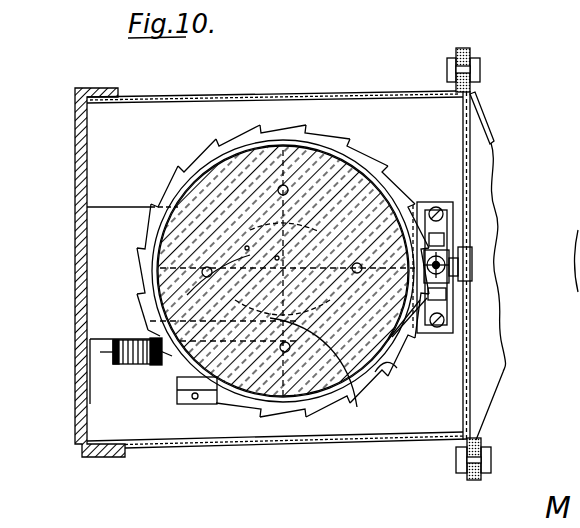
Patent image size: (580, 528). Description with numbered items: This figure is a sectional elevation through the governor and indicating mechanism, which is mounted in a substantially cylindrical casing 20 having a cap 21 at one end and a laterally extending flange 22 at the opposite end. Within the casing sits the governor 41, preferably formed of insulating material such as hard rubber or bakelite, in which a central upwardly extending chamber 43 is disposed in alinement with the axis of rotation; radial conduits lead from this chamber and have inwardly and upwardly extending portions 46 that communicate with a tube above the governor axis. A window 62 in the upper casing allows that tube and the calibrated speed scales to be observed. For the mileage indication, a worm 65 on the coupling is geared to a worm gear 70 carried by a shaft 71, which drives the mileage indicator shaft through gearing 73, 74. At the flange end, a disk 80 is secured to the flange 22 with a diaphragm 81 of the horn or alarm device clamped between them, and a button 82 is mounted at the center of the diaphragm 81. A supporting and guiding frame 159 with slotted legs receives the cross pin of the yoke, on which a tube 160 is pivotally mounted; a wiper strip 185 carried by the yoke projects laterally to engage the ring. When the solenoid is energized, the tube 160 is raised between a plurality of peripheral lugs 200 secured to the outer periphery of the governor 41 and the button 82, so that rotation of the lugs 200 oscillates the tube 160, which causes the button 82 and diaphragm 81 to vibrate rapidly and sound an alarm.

The casing 20 is at (205, 446).
The cap 21 is at (76, 142).
The laterally extending flange 22 is at (462, 47).
The governor 41 is at (340, 170).
The central upwardly extending chamber 43 is at (277, 258).
The inwardly and upwardly extending portions 46 is at (288, 190).
The window 62 is at (578, 240).
The worm 65 is at (247, 248).
The worm gear 70 is at (356, 404).
The shaft 71 is at (170, 362).
The gearing 73 is at (130, 366).
The gearing 74 is at (112, 355).
The disk 80 is at (483, 106).
The diaphragm 81 is at (468, 152).
The button 82 is at (462, 265).
The supporting and guiding frame 159 is at (445, 320).
The tube 160 is at (452, 236).
The wiper strip 185 is at (392, 372).
The peripheral lugs 200 is at (345, 140).